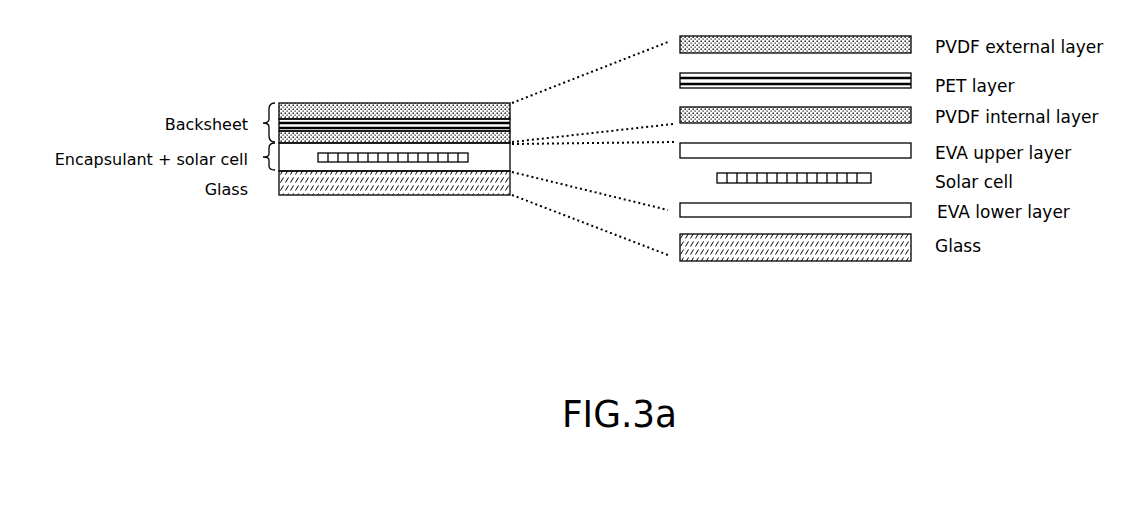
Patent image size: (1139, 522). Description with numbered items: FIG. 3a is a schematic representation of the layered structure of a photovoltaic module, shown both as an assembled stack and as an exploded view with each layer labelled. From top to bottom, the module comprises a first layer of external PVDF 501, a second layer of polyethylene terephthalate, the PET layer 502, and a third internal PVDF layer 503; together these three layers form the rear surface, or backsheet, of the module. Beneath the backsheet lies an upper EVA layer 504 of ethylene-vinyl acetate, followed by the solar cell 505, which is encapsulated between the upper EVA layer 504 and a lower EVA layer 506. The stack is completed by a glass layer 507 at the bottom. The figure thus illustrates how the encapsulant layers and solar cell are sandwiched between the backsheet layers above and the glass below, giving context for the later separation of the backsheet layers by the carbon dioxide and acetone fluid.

The external PVDF layer 501 is at (680, 47).
The PET layer 502 is at (680, 85).
The internal PVDF layer 503 is at (680, 120).
The upper EVA layer 504 is at (680, 152).
The solar cell 505 is at (717, 186).
The lower EVA layer 506 is at (680, 212).
The glass layer 507 is at (680, 248).